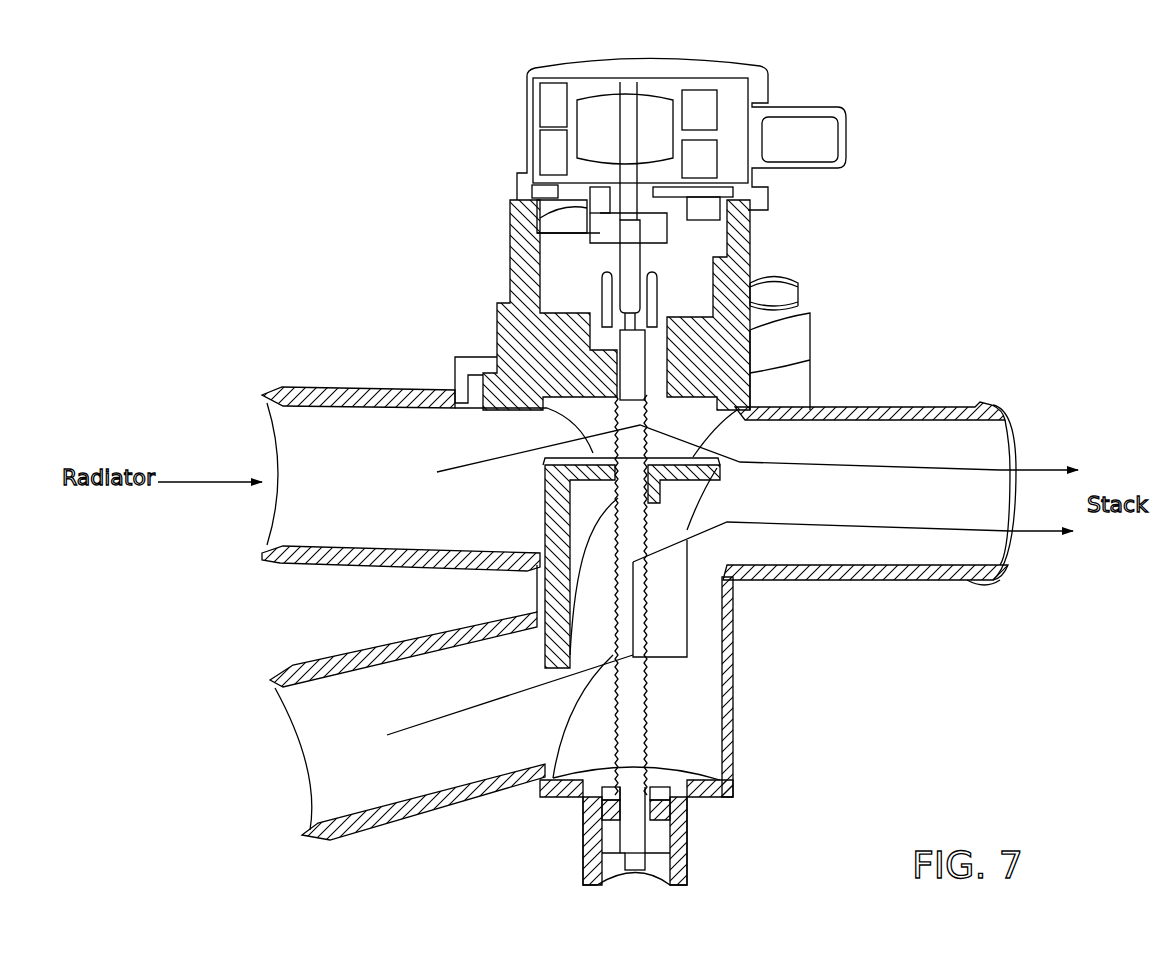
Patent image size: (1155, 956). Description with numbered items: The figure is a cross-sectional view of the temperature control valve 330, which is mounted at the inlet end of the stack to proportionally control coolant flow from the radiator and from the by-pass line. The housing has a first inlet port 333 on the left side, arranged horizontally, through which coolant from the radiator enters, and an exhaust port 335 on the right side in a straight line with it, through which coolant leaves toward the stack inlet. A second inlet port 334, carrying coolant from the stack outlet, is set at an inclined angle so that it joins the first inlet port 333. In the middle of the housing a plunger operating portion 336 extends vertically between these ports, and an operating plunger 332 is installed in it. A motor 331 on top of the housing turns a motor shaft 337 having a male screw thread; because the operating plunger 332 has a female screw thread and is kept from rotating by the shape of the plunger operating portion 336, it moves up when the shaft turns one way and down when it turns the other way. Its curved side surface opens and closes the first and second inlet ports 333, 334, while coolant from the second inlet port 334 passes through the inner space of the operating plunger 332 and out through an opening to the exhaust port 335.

The temperature control valve 330 is at (488, 143).
The motor 331 is at (648, 108).
The operating plunger 332 is at (663, 594).
The first inlet port 333 is at (347, 388).
The second inlet port 334 is at (407, 813).
The exhaust port 335 is at (937, 582).
The plunger operating portion 336 is at (732, 695).
The motor shaft 337 is at (635, 727).